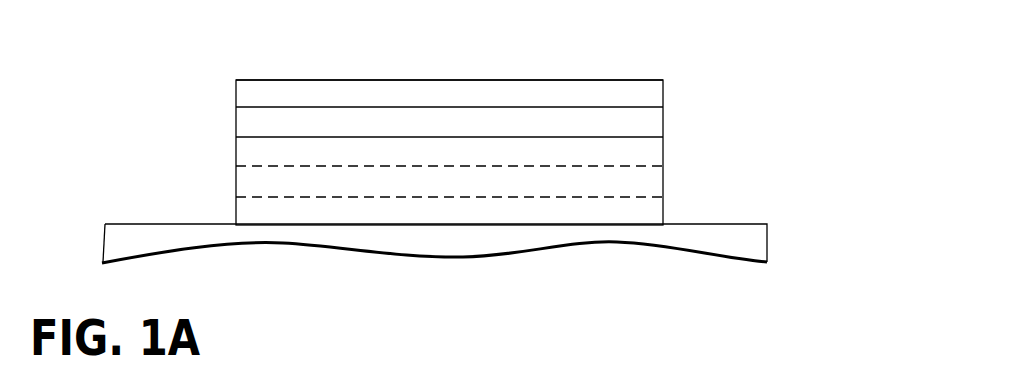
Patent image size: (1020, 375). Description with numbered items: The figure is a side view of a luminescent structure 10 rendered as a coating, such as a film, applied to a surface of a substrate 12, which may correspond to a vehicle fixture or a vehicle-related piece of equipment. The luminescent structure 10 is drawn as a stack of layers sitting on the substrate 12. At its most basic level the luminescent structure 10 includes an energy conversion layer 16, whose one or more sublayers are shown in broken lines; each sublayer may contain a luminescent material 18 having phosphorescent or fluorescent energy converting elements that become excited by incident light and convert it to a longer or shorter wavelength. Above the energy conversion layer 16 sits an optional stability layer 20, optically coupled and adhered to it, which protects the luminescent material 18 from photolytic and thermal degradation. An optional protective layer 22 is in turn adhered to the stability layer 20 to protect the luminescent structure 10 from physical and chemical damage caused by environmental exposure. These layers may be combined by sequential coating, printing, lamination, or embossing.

The luminescent structure 10 is at (598, 54).
The substrate 12 is at (710, 224).
The energy conversion layer 16 is at (236, 178).
The luminescent material 18 is at (616, 182).
The stability layer 20 is at (236, 122).
The protective layer 22 is at (330, 80).